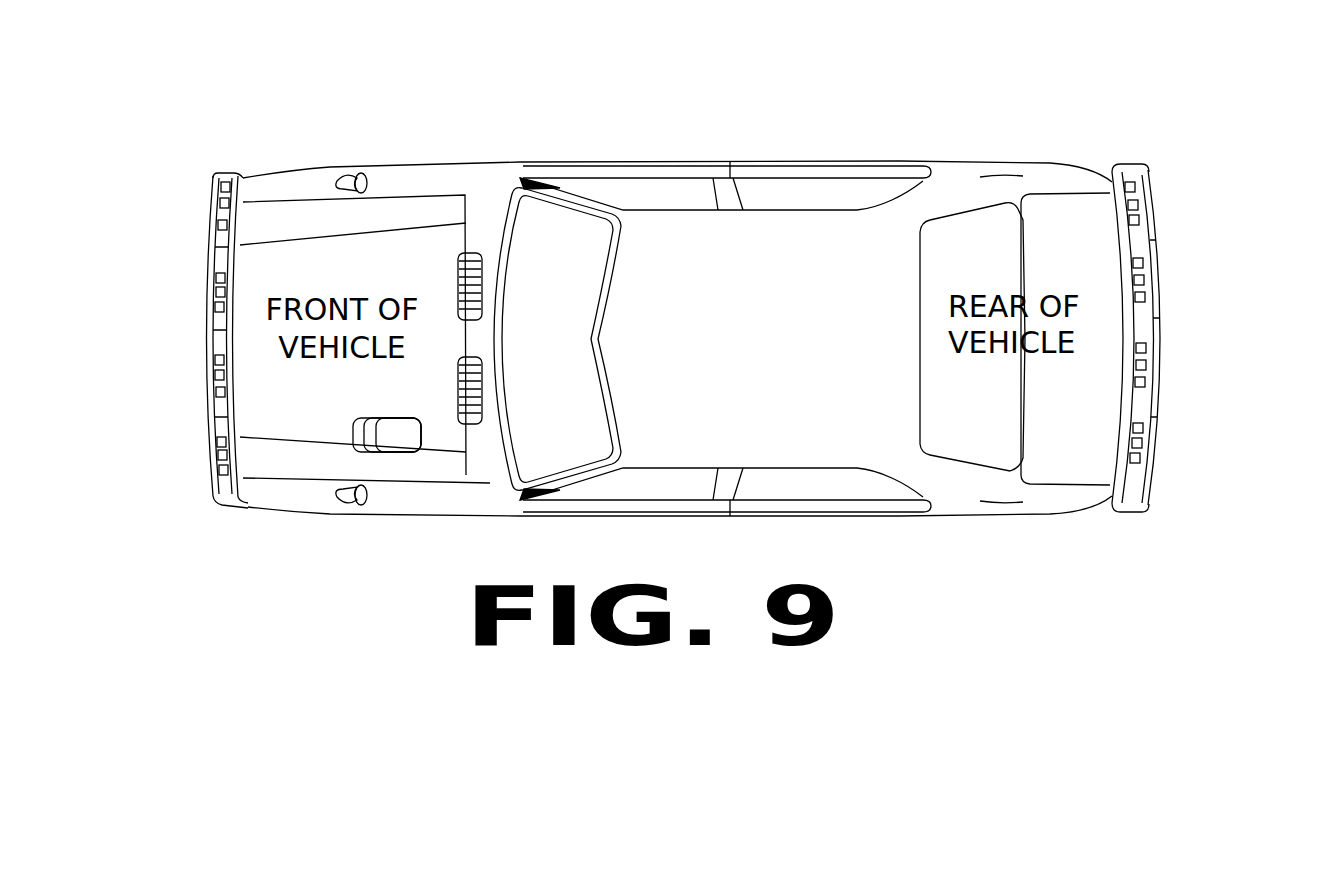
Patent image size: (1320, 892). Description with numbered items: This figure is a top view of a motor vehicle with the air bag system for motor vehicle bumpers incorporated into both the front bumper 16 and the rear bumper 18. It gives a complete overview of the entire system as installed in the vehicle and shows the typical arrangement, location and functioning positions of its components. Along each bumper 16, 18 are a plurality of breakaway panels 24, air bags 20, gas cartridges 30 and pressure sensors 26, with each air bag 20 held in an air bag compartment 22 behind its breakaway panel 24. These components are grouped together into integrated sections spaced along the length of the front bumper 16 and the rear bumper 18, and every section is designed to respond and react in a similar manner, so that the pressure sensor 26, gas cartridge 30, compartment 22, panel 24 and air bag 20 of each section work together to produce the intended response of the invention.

The front bumper 16 is at (233, 507).
The rear bumper 18 is at (1143, 174).
The air bag 20 is at (217, 252).
The air bag compartment 22 is at (1140, 197).
The breakaway panel 24 is at (210, 422).
The pressure sensor 26 is at (207, 332).
The gas cartridge 30 is at (240, 178).